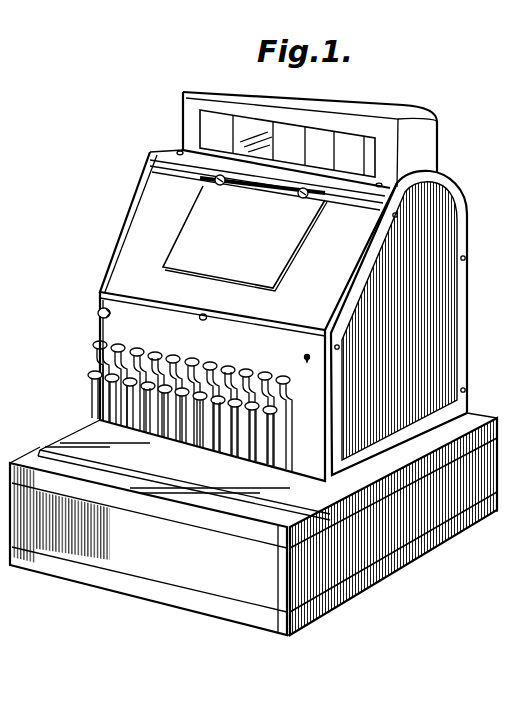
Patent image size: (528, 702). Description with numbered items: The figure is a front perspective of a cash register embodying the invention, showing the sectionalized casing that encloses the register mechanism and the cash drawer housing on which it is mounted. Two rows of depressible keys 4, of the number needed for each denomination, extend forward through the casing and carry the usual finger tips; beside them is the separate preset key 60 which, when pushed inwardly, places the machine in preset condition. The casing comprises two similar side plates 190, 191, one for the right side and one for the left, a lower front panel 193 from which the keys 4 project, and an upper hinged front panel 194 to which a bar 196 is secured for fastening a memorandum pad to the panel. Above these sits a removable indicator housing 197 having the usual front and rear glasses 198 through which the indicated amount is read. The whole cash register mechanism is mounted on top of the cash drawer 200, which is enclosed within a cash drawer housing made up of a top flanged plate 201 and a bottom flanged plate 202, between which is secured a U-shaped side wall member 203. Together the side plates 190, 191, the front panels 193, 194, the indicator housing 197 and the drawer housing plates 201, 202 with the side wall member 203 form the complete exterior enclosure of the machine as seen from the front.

The depressible keys 4 is at (96, 355).
The preset key 60 is at (98, 315).
The side plate 190 is at (463, 212).
The side plate 191 is at (147, 197).
The lower front panel 193 is at (130, 332).
The upper hinged front panel 194 is at (166, 230).
The bar 196 is at (286, 194).
The indicator housing 197 is at (417, 138).
The front and rear glasses 198 is at (250, 130).
The cash drawer 200 is at (158, 571).
The top flanged plate 201 is at (477, 418).
The bottom flanged plate 202 is at (347, 596).
The U-shaped side wall member 203 is at (392, 538).